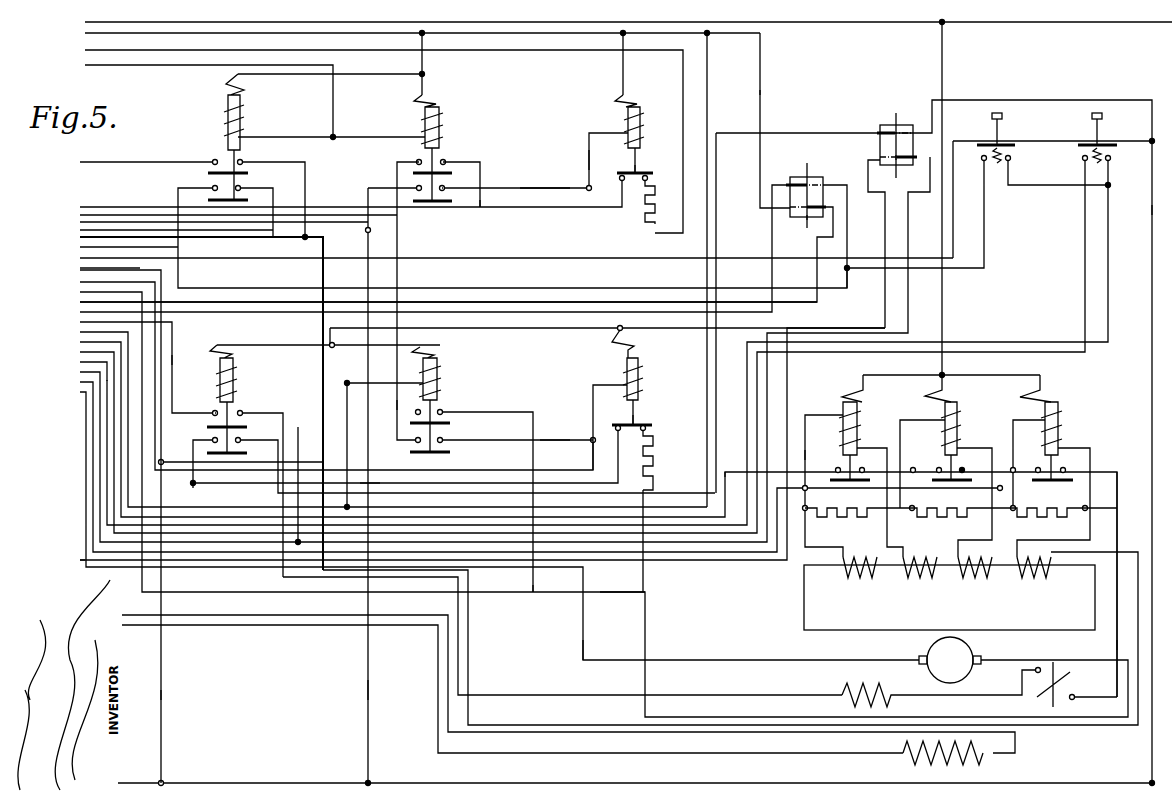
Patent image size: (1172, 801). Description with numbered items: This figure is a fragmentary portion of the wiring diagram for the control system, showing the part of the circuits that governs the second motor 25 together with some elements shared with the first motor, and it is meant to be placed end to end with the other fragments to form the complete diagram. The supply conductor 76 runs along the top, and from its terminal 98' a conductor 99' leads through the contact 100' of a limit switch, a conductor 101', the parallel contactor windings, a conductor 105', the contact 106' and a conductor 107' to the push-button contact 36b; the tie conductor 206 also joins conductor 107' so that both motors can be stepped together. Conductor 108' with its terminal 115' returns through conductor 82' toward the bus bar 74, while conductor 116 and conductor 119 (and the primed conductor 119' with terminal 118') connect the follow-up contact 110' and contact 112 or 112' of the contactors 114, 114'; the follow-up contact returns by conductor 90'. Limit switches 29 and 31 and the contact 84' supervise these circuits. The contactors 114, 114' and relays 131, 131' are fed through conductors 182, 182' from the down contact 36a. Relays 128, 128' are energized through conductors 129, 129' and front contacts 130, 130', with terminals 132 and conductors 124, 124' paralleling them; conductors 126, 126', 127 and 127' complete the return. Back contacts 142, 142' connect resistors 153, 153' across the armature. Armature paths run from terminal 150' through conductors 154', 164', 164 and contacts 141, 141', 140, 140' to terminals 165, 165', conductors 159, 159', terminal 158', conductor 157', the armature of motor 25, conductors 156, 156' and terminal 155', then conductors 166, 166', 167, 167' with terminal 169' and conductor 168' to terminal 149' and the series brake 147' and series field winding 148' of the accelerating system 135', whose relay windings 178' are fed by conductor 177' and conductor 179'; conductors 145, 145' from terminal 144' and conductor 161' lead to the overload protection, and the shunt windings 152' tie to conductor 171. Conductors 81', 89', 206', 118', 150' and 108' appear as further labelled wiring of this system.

The conductor 76 is at (84, 34).
The conductor 156 is at (365, 138).
The conductor 182 is at (236, 101).
The conductor 166 is at (149, 155).
The contactor 114 is at (243, 137).
The contact 140 is at (273, 192).
The contact 112 is at (267, 190).
The conductor 164 is at (187, 209).
The conductor 159 is at (332, 192).
The conductor 124 is at (358, 182).
The conductor 126 is at (278, 318).
The conductor 116 is at (79, 240).
The conductor 81' is at (497, 262).
The conductor 119 is at (463, 264).
The conductor 167 is at (288, 246).
The terminal 169' is at (341, 247).
The relay 131 is at (437, 267).
The contact 141 is at (461, 173).
The front contact 130 is at (477, 178).
The conductor 129 is at (546, 173).
The terminal 132 is at (590, 186).
The relay 128 is at (640, 130).
The back contact 142 is at (652, 161).
The terminal 165 is at (495, 218).
The resistor 153 is at (665, 217).
The terminal 98' is at (756, 120).
The conductor 99' is at (776, 93).
The conductor 119' is at (460, 306).
The limit switch 29 is at (895, 122).
The follow-up contact 110' is at (868, 121).
The contact 84' is at (872, 150).
The limit switch 31 is at (808, 172).
The contact 106' is at (777, 173).
The conductor 90' is at (522, 360).
The contact 100' is at (842, 220).
The conductor 107' is at (479, 254).
The conductor 89' is at (487, 363).
The switch contact 36b is at (1004, 122).
The switch contact 36a is at (1095, 128).
The terminal 115' is at (1127, 193).
The conductor 82' is at (1135, 214).
The conductor 108' is at (595, 410).
The conductor 182' is at (564, 346).
The conductor 206 is at (859, 282).
The conductor 206' is at (580, 519).
The conductor 101' is at (439, 312).
The conductor 105' is at (417, 260).
The conductor 177' is at (961, 200).
The conductor 124' is at (181, 526).
The terminal 155' is at (320, 391).
The conductor 159' is at (586, 504).
The conductor 154' is at (375, 451).
The conductor 145' is at (75, 385).
The conductor 161' is at (190, 361).
The contactor 114' is at (253, 399).
The conductor 167' is at (199, 407).
The contact 140' is at (261, 484).
The contact 112' is at (395, 454).
The conductor 166' is at (476, 458).
The relay 131' is at (445, 399).
The conductor 164' is at (396, 407).
The contact 141' is at (486, 491).
The front contact 130' is at (533, 427).
The conductor 129' is at (558, 426).
The relay 128' is at (614, 380).
The back contact 142' is at (657, 414).
The resistor 153' is at (665, 511).
The conductor 145 is at (730, 455).
The relay windings 178' is at (950, 466).
The terminal 144' is at (796, 429).
The terminal 149' is at (714, 583).
The conductor 168' is at (734, 608).
The conductor 179' is at (437, 559).
The motor accelerating system 135' is at (949, 593).
The motor 25 is at (962, 653).
The series field winding 148' is at (941, 684).
The series brake 147' is at (1077, 684).
The conductor 157' is at (881, 628).
The shunt windings 152' is at (971, 755).
The conductor 171 is at (748, 740).
The conductor 127' is at (187, 691).
The conductor 127 is at (389, 483).
The bus bar 74 is at (302, 782).
The conductor 126' is at (140, 266).
The terminal 150' is at (390, 482).
The terminal 118' is at (220, 526).
The conductor 156' is at (624, 612).
The terminal 165' is at (540, 600).
The terminal 158' is at (644, 586).